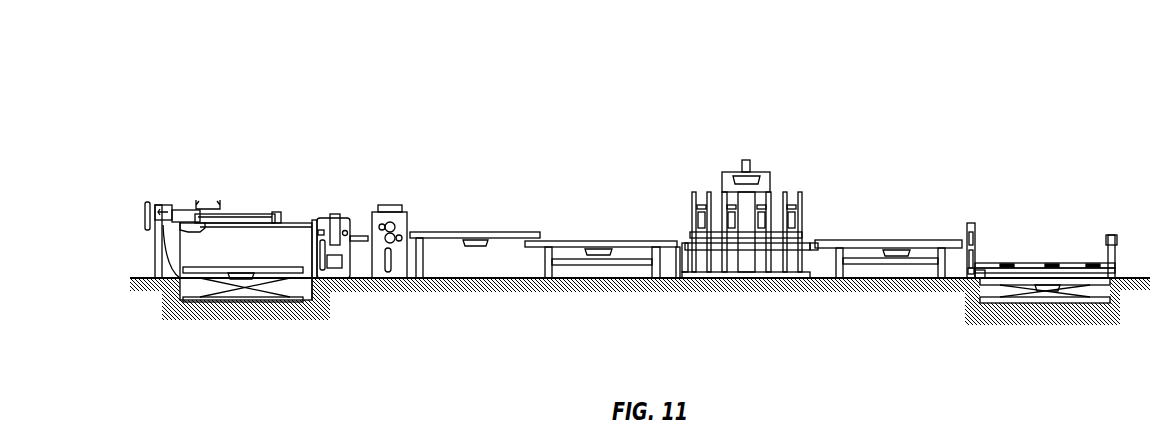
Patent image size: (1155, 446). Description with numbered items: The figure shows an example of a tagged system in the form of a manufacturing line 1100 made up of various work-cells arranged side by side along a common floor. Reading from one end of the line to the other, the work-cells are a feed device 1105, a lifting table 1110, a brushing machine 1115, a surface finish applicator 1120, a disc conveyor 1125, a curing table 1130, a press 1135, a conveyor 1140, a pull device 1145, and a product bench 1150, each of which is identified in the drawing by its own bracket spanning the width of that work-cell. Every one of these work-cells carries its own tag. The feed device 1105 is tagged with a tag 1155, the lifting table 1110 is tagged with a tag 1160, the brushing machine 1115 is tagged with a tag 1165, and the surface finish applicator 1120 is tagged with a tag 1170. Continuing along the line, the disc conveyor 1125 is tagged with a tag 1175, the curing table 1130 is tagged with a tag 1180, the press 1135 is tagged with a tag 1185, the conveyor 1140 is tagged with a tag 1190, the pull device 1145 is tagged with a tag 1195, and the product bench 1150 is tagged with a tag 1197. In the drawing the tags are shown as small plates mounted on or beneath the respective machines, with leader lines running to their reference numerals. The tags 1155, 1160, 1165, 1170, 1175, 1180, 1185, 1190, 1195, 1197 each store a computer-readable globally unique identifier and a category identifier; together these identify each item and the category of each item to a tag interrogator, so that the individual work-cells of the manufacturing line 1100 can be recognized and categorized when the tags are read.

The manufacturing line 1100 is at (1037, 81).
The feed device 1105 is at (180, 160).
The lifting table 1110 is at (300, 175).
The brushing machine 1115 is at (353, 162).
The surface finish applicator 1120 is at (410, 183).
The disc conveyor 1125 is at (537, 145).
The curing table 1130 is at (663, 193).
The press 1135 is at (805, 127).
The conveyor 1140 is at (938, 192).
The pull device 1145 is at (990, 167).
The product bench 1150 is at (1105, 192).
The tag 1155 is at (148, 228).
The tag 1160 is at (237, 280).
The tag 1165 is at (323, 280).
The tag 1170 is at (389, 272).
The tag 1175 is at (477, 248).
The tag 1180 is at (602, 257).
The tag 1185 is at (753, 178).
The tag 1190 is at (902, 258).
The tag 1195 is at (970, 280).
The tag 1197 is at (1050, 290).